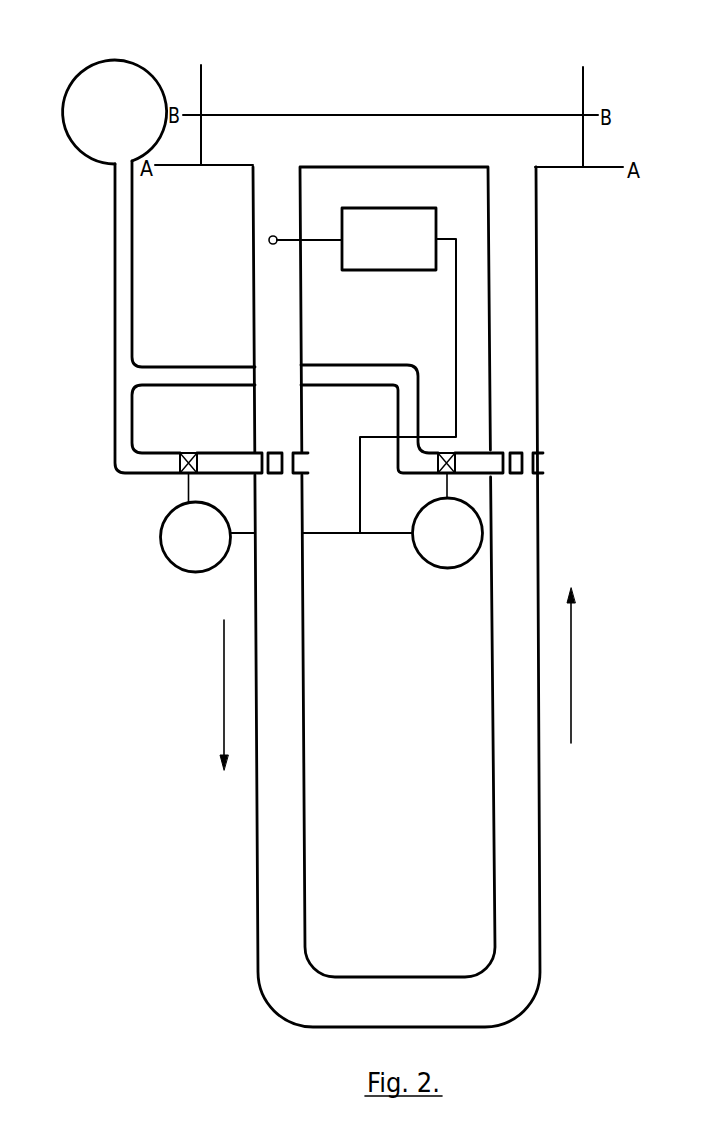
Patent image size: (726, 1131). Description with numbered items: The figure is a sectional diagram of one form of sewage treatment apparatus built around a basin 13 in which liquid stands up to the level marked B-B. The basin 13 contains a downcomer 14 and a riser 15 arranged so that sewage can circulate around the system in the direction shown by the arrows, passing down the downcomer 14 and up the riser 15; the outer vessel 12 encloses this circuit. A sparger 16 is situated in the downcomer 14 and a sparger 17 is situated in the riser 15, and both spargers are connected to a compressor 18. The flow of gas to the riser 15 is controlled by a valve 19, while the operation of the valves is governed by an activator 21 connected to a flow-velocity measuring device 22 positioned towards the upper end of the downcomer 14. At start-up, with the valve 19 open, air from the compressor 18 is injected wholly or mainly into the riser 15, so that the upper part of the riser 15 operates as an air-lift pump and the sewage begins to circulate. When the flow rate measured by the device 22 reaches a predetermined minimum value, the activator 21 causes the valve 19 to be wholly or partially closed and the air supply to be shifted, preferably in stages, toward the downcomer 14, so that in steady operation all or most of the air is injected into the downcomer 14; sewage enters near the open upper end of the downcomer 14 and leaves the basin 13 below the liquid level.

The outer U-shaped tube 12 is at (430, 1014).
The basin 13 is at (583, 147).
The downcomer 14 is at (270, 833).
The riser 15 is at (523, 830).
The sparger 16 is at (255, 450).
The sparger 17 is at (522, 462).
The compressor 18 is at (98, 90).
The valve 19 is at (452, 552).
The activator 21 is at (368, 257).
The flow-velocity measuring device 22 is at (274, 243).